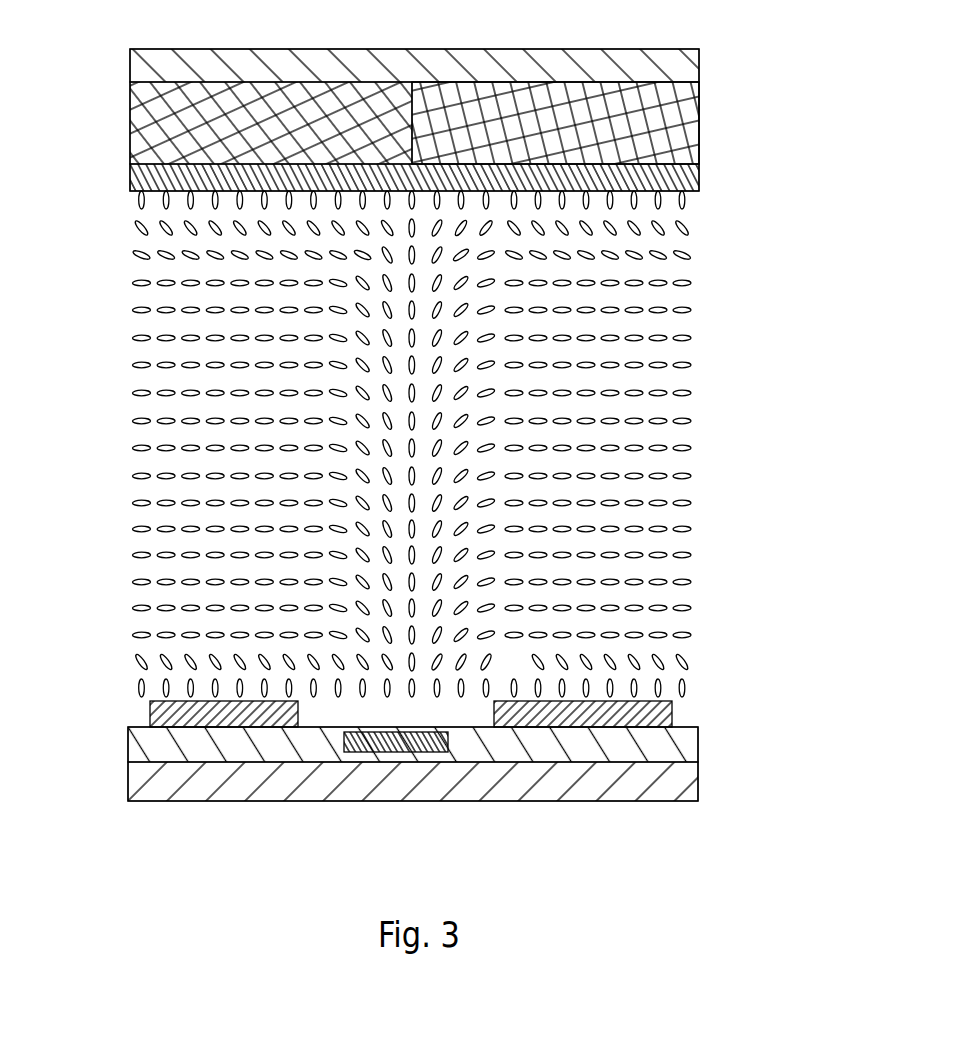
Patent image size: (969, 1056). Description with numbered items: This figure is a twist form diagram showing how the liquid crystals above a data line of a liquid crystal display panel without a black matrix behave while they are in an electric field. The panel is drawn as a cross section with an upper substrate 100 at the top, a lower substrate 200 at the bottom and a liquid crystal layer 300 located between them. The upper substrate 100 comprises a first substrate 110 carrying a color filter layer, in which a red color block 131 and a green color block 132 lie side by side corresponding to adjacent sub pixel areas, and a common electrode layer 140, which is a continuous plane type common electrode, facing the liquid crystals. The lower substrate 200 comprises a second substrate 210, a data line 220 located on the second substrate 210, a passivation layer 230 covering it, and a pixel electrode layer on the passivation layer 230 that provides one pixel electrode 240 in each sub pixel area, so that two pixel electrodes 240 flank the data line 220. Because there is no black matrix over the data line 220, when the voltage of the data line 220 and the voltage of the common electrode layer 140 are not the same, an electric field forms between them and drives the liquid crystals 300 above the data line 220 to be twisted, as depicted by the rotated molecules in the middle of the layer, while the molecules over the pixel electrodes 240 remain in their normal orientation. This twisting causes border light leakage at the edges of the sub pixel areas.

The upper substrate 100 is at (78, 51).
The first substrate 110 is at (567, 72).
The red color block 131 is at (595, 148).
The green color block 132 is at (567, 125).
The common electrode layer 140 is at (690, 176).
The lower substrate 200 is at (78, 710).
The second substrate 210 is at (605, 784).
The data line 220 is at (393, 745).
The passivation layer 230 is at (595, 748).
The pixel electrode 240 is at (600, 706).
The liquid crystal layer 300 is at (607, 420).